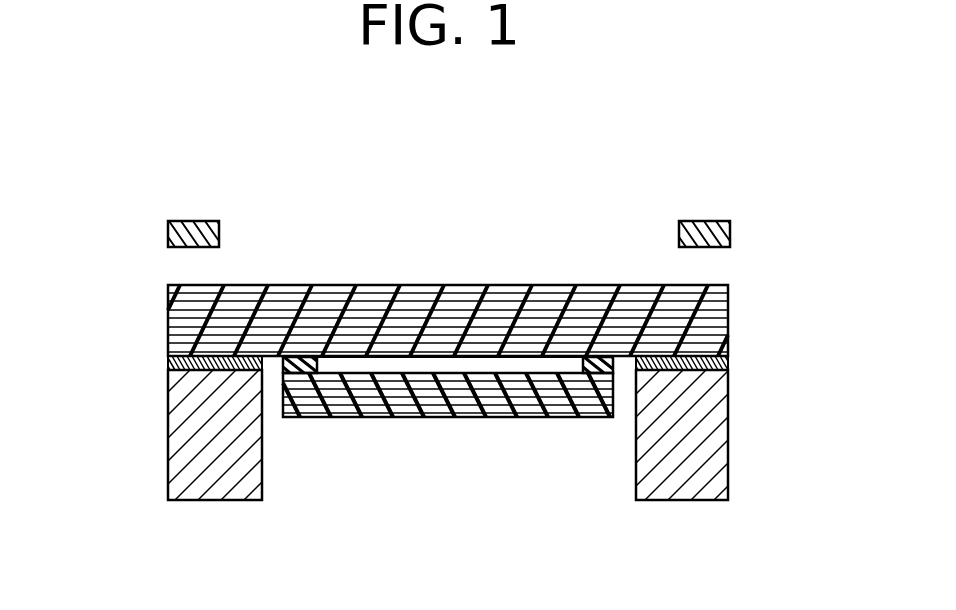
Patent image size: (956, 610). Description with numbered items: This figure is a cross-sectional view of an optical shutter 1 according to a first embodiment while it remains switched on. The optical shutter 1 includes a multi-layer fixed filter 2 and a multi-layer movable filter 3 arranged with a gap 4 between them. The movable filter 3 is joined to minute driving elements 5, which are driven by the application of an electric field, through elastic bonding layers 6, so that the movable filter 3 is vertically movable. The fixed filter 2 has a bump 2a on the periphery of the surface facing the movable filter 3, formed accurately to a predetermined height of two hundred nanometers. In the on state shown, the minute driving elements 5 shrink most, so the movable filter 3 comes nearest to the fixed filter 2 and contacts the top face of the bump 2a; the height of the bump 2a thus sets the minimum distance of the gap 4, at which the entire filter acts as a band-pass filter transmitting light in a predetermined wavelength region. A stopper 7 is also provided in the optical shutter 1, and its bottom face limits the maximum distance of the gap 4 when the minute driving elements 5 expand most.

The optical shutter 1 is at (595, 172).
The fixed filter 2 is at (455, 403).
The bump 2a is at (587, 361).
The movable filter 3 is at (728, 313).
The gap 4 is at (455, 363).
The minute driving elements 5 is at (193, 407).
The elastic bonding layers 6 is at (168, 365).
The stopper 7 is at (168, 231).